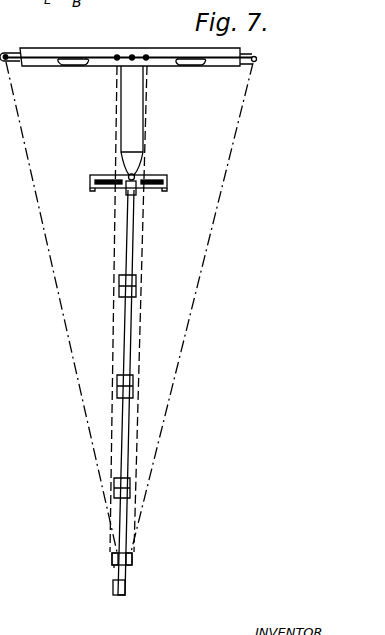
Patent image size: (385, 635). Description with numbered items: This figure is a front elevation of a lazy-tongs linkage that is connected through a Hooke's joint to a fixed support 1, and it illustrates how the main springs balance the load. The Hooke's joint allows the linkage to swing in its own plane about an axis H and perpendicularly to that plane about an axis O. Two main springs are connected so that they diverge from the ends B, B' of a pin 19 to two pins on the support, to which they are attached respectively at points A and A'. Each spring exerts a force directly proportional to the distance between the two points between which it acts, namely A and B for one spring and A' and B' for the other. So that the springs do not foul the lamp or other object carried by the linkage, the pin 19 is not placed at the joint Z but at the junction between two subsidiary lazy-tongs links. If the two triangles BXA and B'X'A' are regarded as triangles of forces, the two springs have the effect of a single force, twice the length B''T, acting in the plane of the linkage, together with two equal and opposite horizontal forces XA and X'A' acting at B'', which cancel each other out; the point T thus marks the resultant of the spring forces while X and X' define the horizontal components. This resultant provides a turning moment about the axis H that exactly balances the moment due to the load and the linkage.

The spring connection point A is at (18, 73).
The spring connection point A' is at (266, 75).
The triangle-of-forces vertex X is at (110, 38).
The triangle-of-forces vertex T is at (132, 56).
The triangle-of-forces vertex X' is at (154, 38).
The fixed support 1 is at (143, 113).
The axis O is at (135, 176).
The axis H is at (90, 183).
The pin end B is at (87, 568).
The pin end B' is at (158, 554).
The force application point B'' is at (92, 593).
The pin 19 is at (132, 562).
The joint Z is at (124, 592).